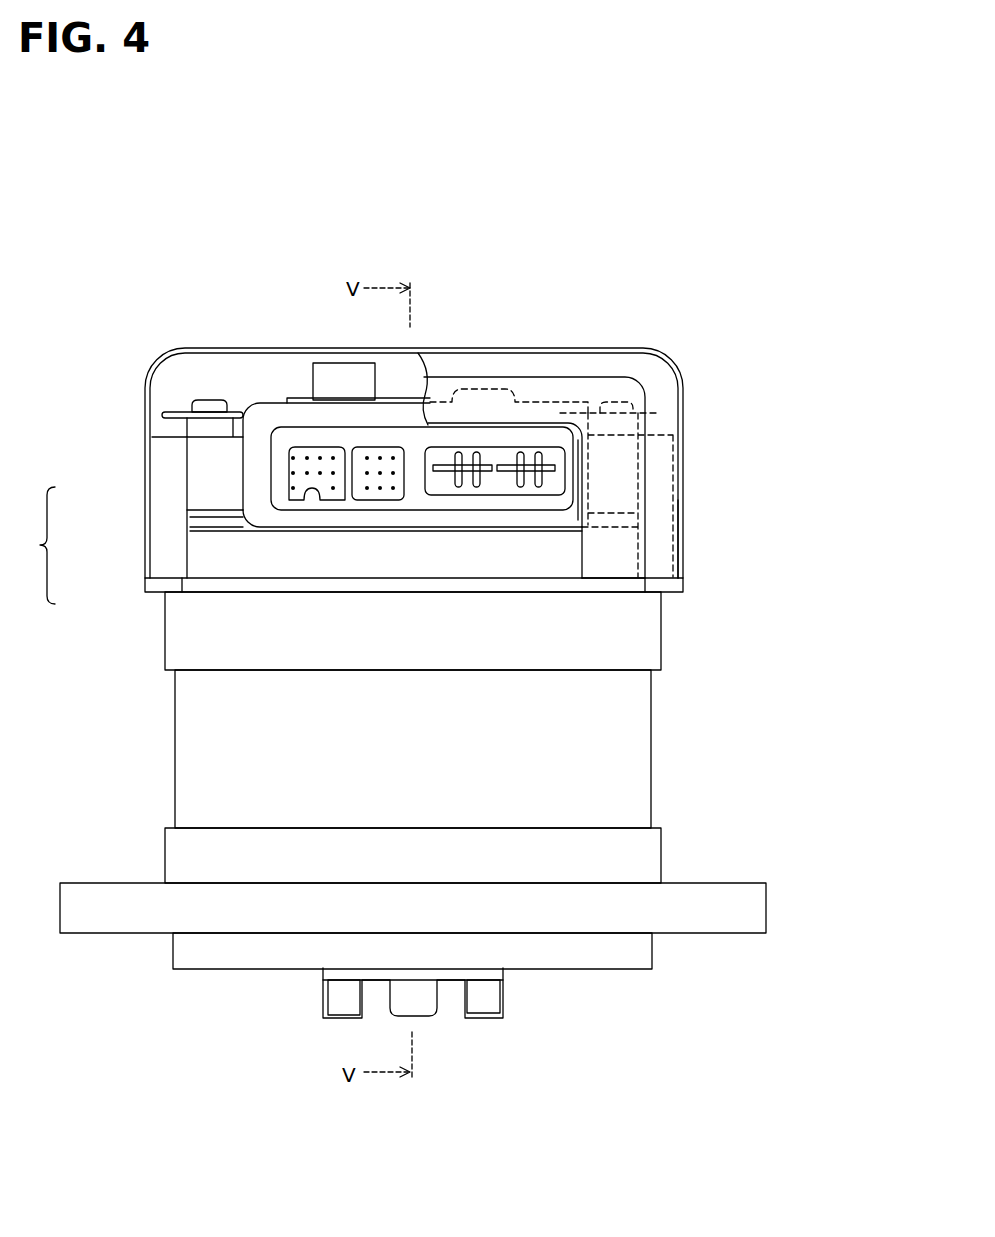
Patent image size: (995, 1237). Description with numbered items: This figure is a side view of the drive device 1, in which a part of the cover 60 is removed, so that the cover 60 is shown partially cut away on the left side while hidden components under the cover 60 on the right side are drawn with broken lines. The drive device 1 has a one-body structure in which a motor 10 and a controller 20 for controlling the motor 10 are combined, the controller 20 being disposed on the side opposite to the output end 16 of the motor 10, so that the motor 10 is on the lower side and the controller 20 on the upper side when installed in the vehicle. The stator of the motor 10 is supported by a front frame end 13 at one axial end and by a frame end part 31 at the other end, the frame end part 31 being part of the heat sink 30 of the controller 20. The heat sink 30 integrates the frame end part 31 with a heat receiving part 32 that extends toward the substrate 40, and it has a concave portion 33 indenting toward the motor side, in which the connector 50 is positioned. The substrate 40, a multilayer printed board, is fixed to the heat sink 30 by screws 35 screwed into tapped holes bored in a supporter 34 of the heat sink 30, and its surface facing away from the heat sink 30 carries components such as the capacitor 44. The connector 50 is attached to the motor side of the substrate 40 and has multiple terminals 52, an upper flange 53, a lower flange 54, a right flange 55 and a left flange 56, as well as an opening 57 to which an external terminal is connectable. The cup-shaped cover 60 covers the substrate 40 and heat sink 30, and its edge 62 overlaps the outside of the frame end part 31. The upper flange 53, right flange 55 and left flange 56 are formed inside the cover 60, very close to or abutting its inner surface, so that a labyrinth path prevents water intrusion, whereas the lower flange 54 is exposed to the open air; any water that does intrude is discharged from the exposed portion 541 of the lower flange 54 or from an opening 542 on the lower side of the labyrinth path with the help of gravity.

The drive device 1 is at (683, 290).
The motor 10 is at (172, 730).
The front frame end 13 is at (222, 950).
The output end 16 is at (488, 1007).
The controller 20 is at (147, 379).
The heat sink 30 is at (33, 545).
The frame end part 31 is at (183, 630).
The heat receiving part 32 is at (212, 463).
The concave portion 33 is at (190, 511).
The supporter 34 is at (150, 424).
The screw 35 is at (220, 405).
The substrate 40 is at (178, 411).
The capacitor 44 is at (335, 371).
The connector 50 is at (271, 412).
The terminal 52 is at (332, 492).
The upper flange 53 is at (402, 400).
The lower flange 54 is at (388, 523).
The portion of the lower flange 541 is at (582, 560).
The opening 542 is at (590, 580).
The right flange 55 is at (590, 450).
The left flange 56 is at (252, 445).
The opening 57 is at (292, 492).
The cover 60 is at (606, 350).
The edge 62 is at (684, 566).